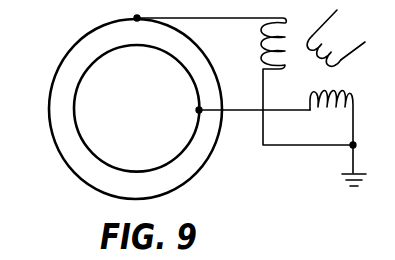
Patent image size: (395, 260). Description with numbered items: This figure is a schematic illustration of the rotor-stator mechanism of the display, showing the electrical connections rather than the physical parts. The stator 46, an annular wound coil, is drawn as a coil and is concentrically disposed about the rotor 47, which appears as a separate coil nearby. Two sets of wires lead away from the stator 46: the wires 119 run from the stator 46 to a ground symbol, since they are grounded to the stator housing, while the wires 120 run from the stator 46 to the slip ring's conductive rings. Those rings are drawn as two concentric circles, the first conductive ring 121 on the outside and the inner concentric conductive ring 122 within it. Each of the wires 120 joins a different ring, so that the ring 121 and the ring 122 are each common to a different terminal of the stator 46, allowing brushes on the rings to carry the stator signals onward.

The first conductive ring 121 is at (74, 168).
The inner concentric conductive ring 122 is at (182, 152).
The wires 120 is at (243, 108).
The stator 46 is at (300, 94).
The rotor 47 is at (365, 38).
The wires 119 is at (353, 123).